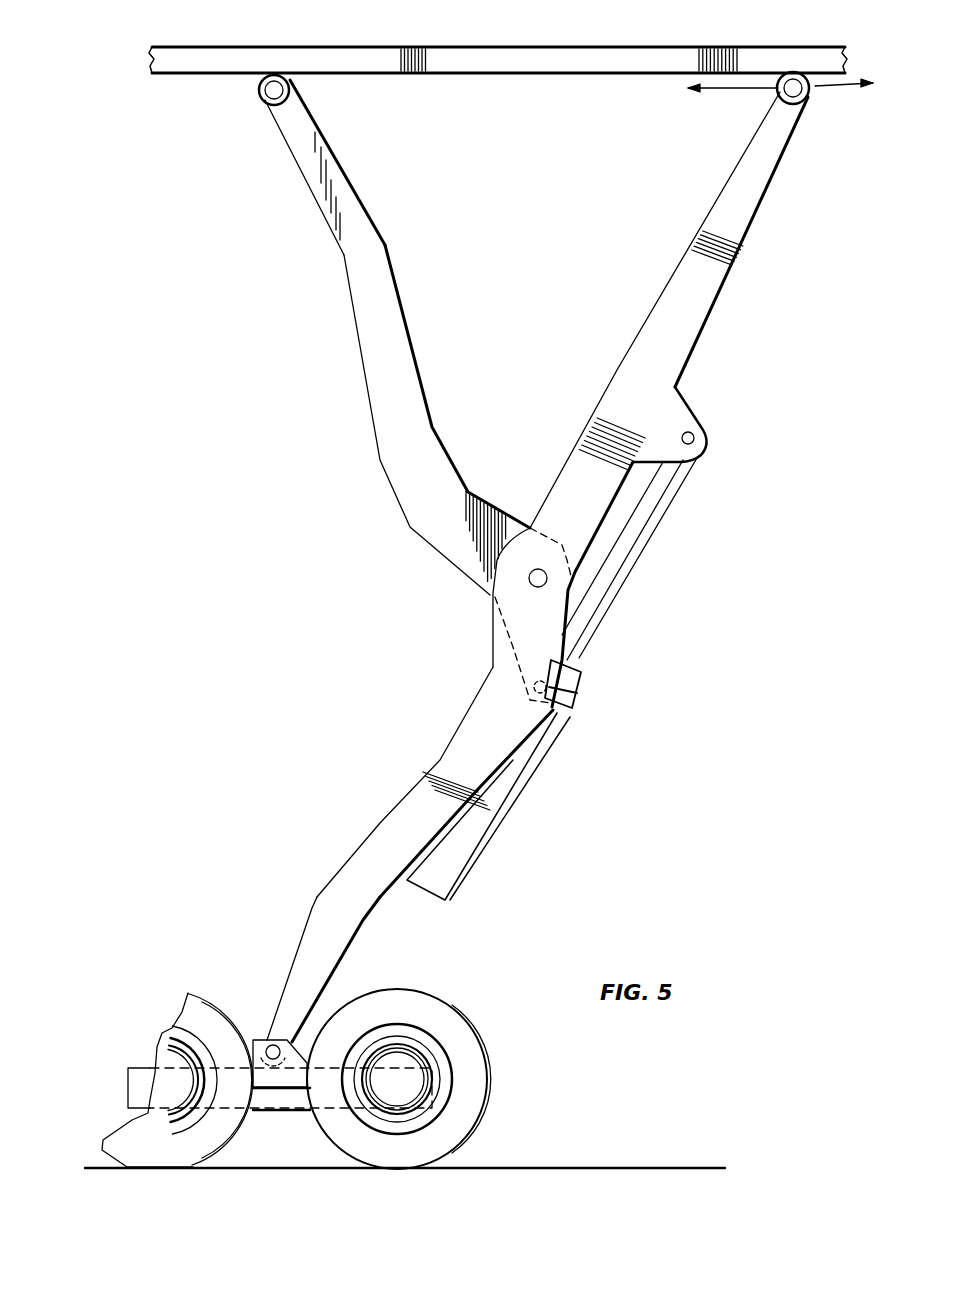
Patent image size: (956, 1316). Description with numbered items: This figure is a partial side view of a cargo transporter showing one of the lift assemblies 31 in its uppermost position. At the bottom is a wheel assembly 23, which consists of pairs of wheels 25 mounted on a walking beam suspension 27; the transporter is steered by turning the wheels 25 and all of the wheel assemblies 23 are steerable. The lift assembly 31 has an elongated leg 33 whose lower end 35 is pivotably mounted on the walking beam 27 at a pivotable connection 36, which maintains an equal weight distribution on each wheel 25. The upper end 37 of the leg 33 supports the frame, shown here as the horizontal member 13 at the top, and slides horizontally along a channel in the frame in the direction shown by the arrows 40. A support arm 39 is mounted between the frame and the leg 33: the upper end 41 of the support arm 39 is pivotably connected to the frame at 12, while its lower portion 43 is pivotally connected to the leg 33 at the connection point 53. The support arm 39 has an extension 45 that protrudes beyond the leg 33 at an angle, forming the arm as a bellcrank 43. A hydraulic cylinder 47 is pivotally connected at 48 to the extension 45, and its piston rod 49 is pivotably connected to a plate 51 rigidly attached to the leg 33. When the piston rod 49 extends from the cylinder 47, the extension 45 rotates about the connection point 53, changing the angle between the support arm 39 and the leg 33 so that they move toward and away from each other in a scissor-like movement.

The pivot connection 12 is at (273, 88).
The support beam 13 is at (468, 62).
The wheel assembly 23 is at (307, 1052).
The wheels 25 is at (198, 1017).
The walking beam suspension 27 is at (282, 1100).
The lift assembly 31 is at (528, 557).
The elongated leg 33 is at (443, 763).
The lower end of leg 35 is at (293, 977).
The pivotable connection 36 is at (268, 1040).
The upper end of leg 37 is at (743, 197).
The support arm 39 is at (368, 328).
The arrows 40 is at (727, 88).
The upper end of support arm 41 is at (297, 148).
The lower portion of support arm (bellcrank) 43 is at (508, 525).
The extension 45 is at (537, 655).
The hydraulic cylinder 47 is at (465, 830).
The pivotal connection 48 is at (580, 683).
The piston rod 49 is at (633, 533).
The plate 51 is at (680, 410).
The connection point 53 is at (529, 579).